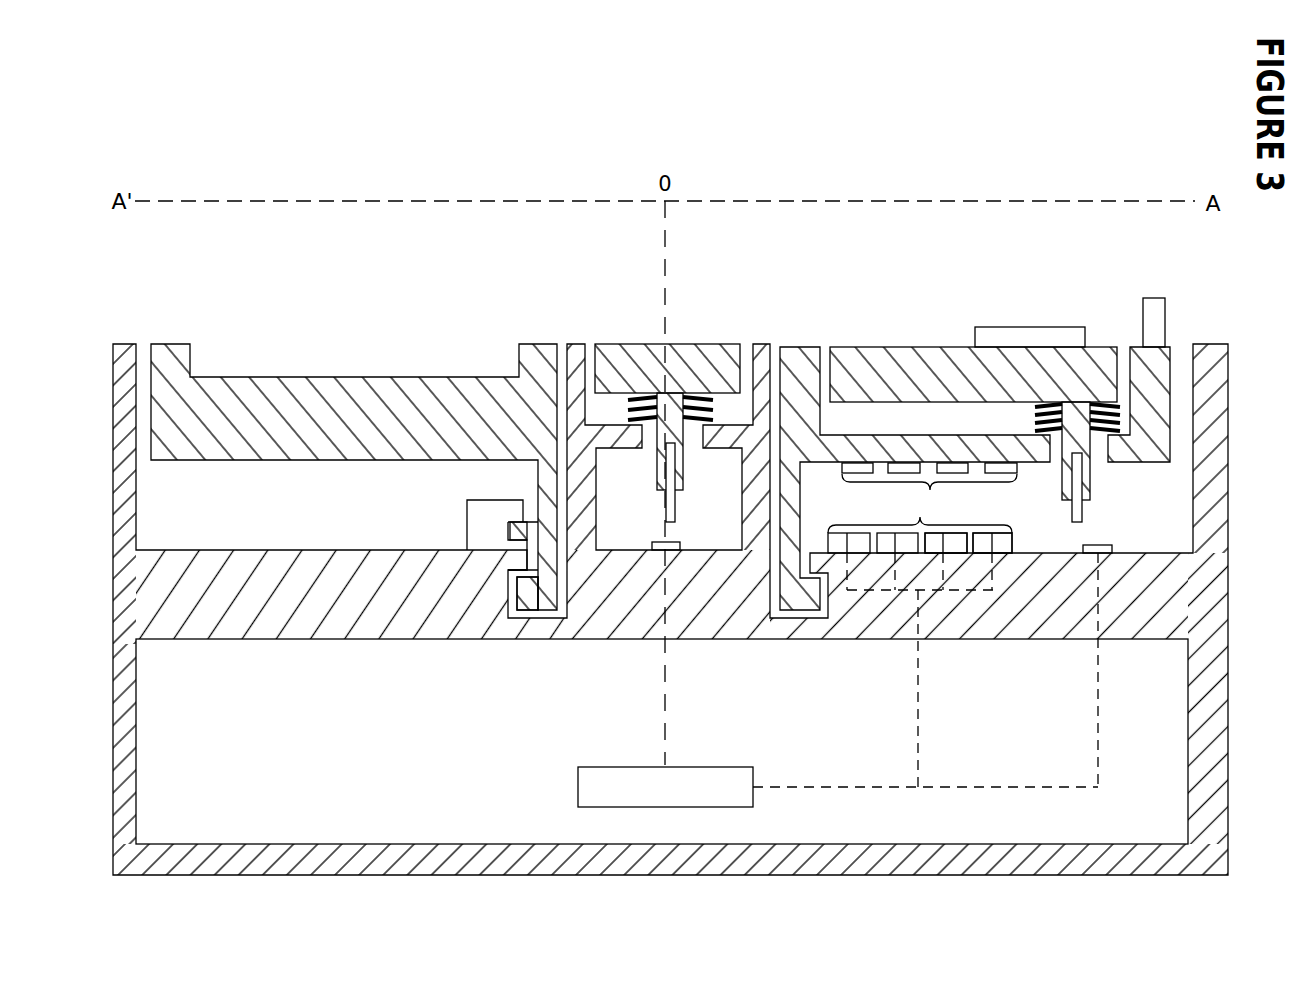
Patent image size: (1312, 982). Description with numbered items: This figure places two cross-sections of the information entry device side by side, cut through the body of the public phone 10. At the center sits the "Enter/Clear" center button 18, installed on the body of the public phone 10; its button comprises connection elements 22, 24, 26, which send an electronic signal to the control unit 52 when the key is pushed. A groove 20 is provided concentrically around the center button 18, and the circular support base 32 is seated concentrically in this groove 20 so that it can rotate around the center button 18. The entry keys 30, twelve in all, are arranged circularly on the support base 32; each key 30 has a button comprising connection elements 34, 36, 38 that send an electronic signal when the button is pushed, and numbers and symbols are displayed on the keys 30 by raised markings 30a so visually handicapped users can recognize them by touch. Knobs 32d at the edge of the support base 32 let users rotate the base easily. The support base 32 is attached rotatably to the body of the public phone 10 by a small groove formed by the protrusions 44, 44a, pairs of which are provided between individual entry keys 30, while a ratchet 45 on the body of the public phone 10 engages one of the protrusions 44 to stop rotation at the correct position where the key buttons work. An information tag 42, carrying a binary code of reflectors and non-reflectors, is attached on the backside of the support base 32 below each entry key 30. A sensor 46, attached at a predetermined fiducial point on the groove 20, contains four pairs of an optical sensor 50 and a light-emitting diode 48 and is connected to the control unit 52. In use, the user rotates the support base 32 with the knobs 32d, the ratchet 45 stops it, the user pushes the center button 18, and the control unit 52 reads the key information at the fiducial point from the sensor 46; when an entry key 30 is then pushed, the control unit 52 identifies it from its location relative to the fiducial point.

The public phone 10 is at (1208, 602).
The center button 18 is at (619, 345).
The groove 20 is at (782, 346).
The connection element 22 is at (703, 345).
The connection element 24 is at (675, 522).
The connection element 26 is at (662, 553).
The entry key 30 is at (1073, 370).
The raised marking 30a is at (1037, 340).
The support base 32 is at (170, 358).
The knob 32d is at (1148, 303).
The connection element 34 is at (1087, 457).
The connection element 36 is at (1082, 510).
The connection element 38 is at (1103, 550).
The information tag 42 is at (935, 487).
The protrusion 44 is at (522, 530).
The protrusion 44a is at (532, 597).
The ratchet 45 is at (480, 532).
The sensor 46 is at (921, 520).
The light-emitting diode 48 is at (1008, 553).
The optical sensor 50 is at (985, 553).
The control unit 52 is at (735, 797).